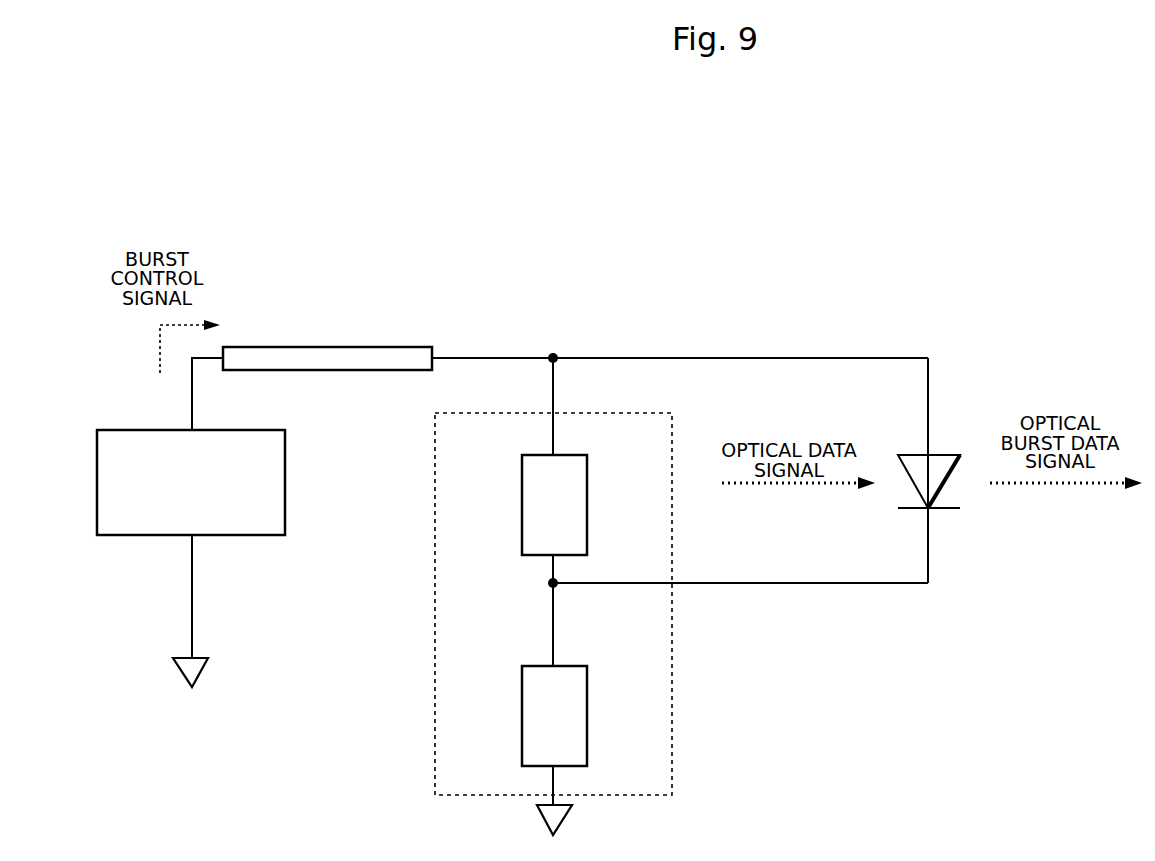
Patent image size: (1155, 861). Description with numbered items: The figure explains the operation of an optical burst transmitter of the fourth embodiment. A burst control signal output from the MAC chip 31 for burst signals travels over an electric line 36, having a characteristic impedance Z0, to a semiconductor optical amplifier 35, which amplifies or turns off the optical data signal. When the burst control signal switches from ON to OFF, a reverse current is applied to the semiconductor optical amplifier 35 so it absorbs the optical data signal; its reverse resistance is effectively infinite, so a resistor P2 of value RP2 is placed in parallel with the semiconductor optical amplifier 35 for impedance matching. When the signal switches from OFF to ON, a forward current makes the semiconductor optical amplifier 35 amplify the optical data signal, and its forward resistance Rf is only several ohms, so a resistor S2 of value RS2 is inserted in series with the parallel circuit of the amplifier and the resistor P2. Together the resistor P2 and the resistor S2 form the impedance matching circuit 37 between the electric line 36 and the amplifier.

The MAC chip for burst signals 31 is at (259, 416).
The semiconductor optical amplifier 35 is at (964, 440).
The electric line 36 is at (393, 347).
The impedance matching circuit 37 is at (435, 613).
The resistor P2 is at (572, 455).
The resistor S2 is at (572, 666).